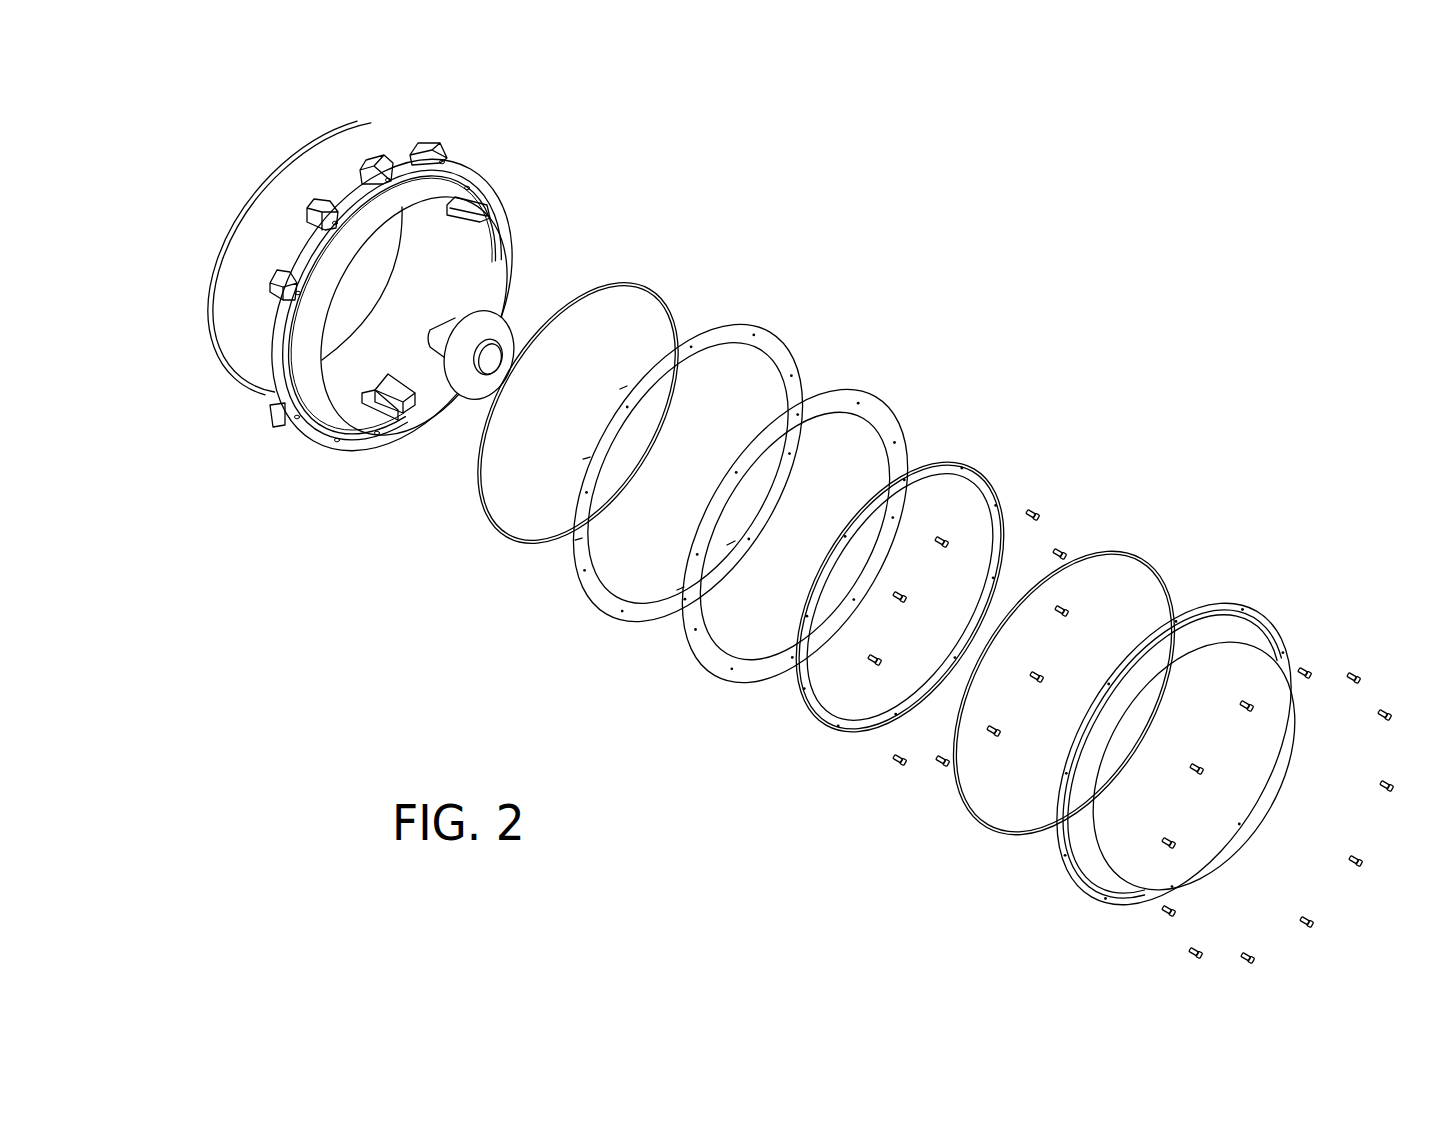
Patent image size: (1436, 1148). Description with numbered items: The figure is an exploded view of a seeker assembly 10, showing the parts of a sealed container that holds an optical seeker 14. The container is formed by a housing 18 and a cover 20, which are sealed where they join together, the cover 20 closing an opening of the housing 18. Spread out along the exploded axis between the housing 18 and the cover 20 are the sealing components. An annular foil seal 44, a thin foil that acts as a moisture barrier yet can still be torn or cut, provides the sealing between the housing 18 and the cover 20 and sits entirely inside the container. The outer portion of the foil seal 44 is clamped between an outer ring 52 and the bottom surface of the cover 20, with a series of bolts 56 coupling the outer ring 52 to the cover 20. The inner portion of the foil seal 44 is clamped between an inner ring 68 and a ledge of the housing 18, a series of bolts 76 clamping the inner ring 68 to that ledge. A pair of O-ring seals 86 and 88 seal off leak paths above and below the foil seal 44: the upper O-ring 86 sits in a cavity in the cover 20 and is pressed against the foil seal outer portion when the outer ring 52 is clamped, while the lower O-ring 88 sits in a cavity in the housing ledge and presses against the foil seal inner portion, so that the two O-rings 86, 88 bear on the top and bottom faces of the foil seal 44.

The seeker assembly 10 is at (388, 527).
The optical seeker 14 is at (513, 332).
The housing 18 is at (292, 180).
The cover 20 is at (1094, 860).
The annular foil seal 44 is at (712, 660).
The outer ring 52 is at (588, 597).
The bolts 56 is at (1356, 664).
The inner ring 68 is at (955, 470).
The bolts 76 is at (1060, 519).
The O-ring seal 86 is at (1149, 574).
The O-ring seal 88 is at (493, 523).